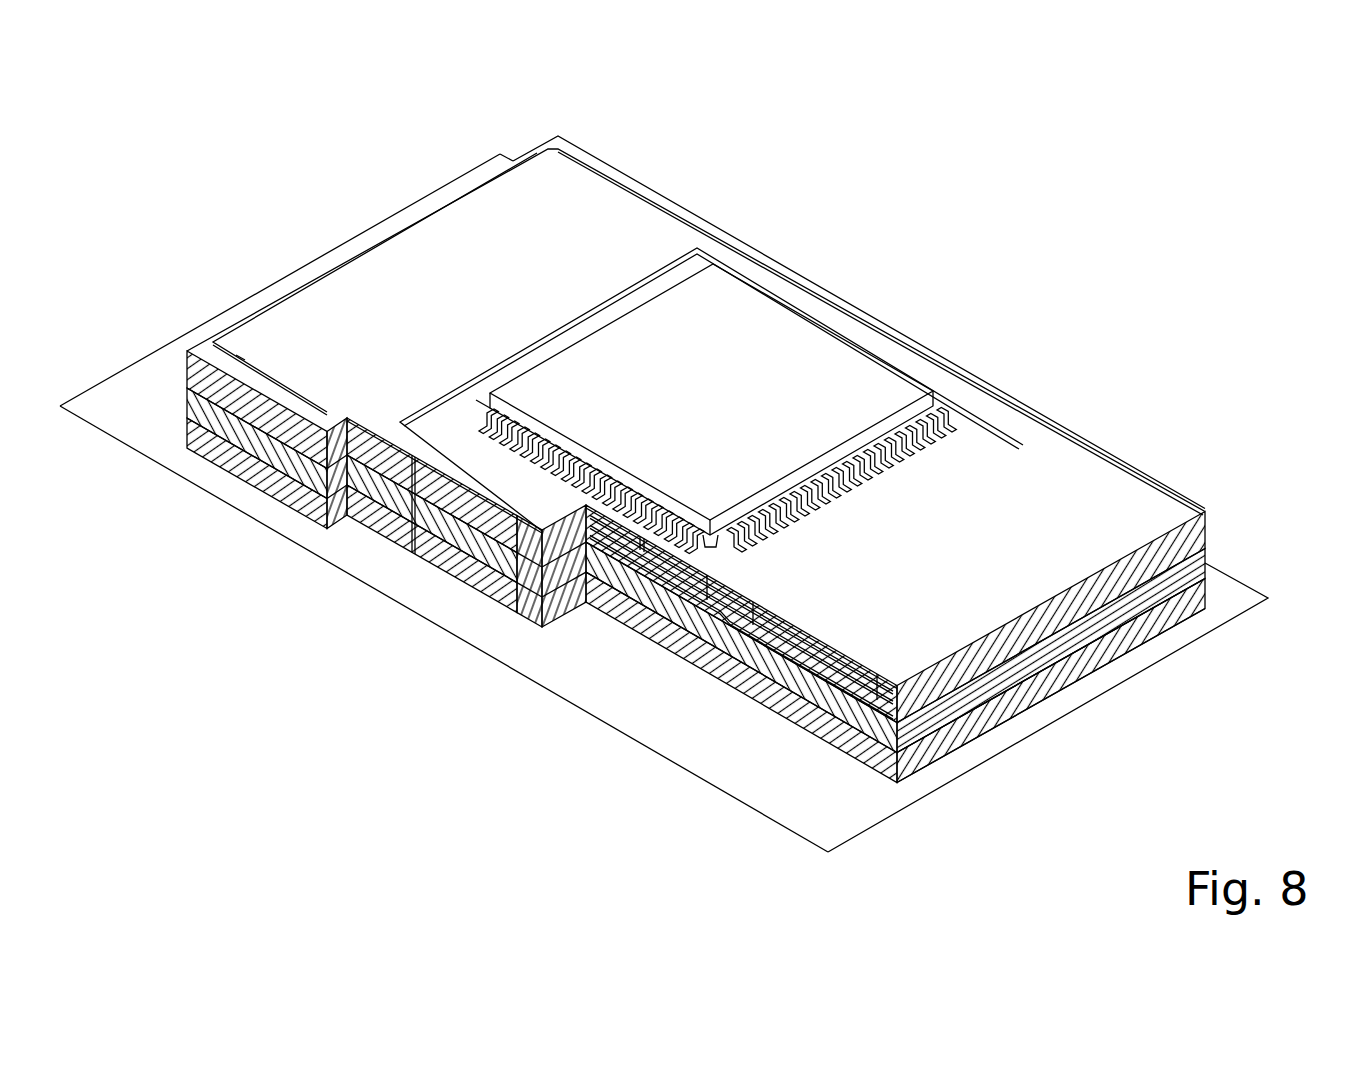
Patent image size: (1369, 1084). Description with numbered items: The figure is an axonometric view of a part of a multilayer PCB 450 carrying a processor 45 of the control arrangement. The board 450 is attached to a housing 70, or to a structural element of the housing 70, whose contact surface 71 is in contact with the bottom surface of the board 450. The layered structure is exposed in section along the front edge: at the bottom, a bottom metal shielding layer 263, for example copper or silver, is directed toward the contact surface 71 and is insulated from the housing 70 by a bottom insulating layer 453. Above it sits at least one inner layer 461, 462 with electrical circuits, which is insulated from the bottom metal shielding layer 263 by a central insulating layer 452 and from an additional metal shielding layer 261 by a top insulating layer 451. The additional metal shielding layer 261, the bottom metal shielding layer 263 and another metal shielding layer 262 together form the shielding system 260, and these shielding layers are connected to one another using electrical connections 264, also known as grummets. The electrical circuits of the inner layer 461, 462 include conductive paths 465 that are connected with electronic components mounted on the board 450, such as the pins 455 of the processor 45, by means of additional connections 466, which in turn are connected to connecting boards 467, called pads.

The metal shielding layer 262 is at (590, 188).
The processor 45 is at (843, 377).
The pins 455 is at (947, 430).
The PCB 450 is at (1003, 457).
The shielding system 260 is at (1070, 460).
The top insulating layer 451 is at (1200, 535).
The central insulating layer 452 is at (1207, 560).
The bottom insulating layer 453 is at (1200, 605).
The inner layer 461 is at (1110, 640).
The bottom metal shielding layer 263 is at (1080, 623).
The additional metal shielding layer 261 is at (993, 693).
The conductive paths 465 is at (870, 690).
The additional connections 466 is at (713, 637).
The connecting boards 467 is at (750, 617).
The housing 70 is at (655, 755).
The contact surface 71 is at (610, 678).
The electrical connections 264 is at (507, 590).
The inner layer 462 is at (265, 497).